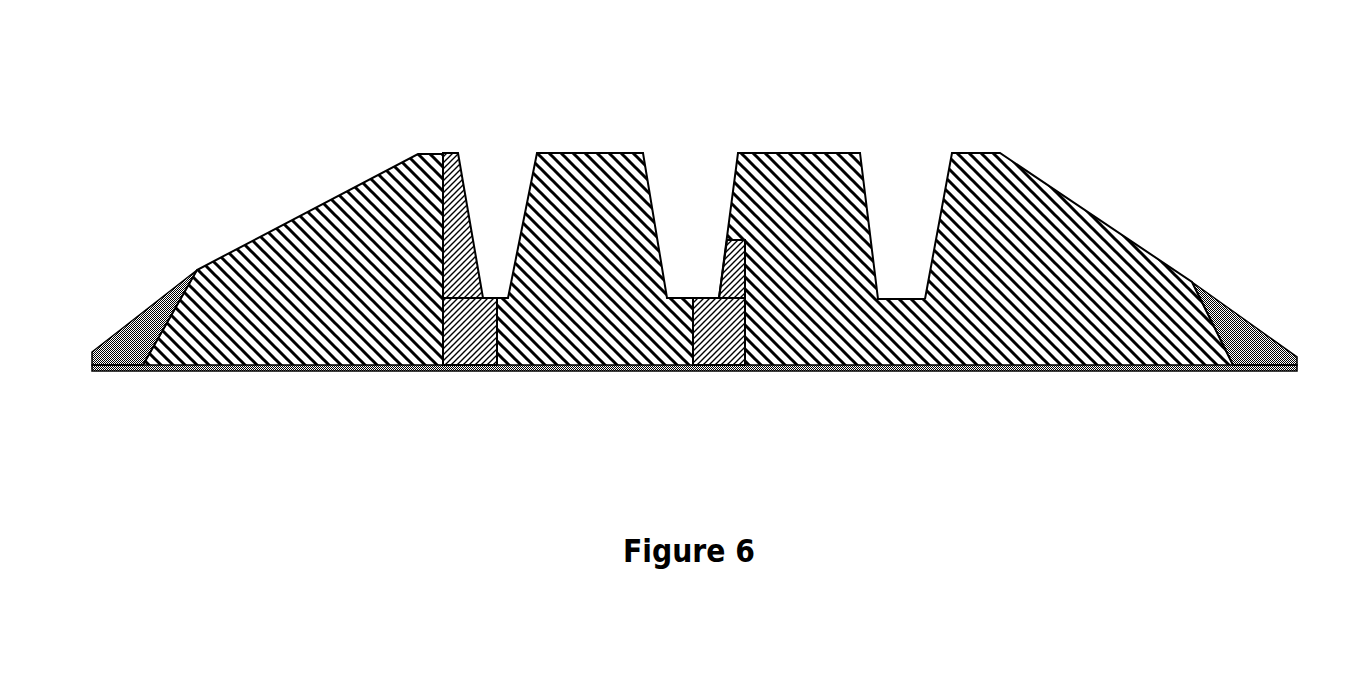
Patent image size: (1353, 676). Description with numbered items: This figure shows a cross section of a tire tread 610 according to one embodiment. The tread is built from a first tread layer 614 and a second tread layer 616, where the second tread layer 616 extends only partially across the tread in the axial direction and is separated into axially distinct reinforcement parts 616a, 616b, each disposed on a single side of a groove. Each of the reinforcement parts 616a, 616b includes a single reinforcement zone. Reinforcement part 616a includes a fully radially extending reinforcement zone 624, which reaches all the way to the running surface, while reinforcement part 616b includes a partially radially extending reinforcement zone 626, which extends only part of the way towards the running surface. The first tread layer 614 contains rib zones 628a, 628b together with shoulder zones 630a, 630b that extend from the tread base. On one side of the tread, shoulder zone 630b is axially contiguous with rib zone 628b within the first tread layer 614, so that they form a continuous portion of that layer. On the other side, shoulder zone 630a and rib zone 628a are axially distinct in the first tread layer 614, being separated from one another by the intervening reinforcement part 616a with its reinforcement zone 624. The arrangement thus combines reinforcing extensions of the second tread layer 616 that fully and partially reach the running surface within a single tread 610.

The tire tread 610 is at (258, 92).
The first tread layer 614 is at (688, 205).
The second tread layer 616 is at (649, 370).
The reinforcement part 616a is at (462, 332).
The reinforcement part 616b is at (722, 343).
The fully radially extending reinforcement zone 624 is at (461, 183).
The partially radially extending reinforcement zone 626 is at (737, 258).
The rib zone 628a is at (577, 153).
The rib zone 628b is at (795, 153).
The shoulder zone 630a is at (283, 227).
The shoulder zone 630b is at (1087, 213).